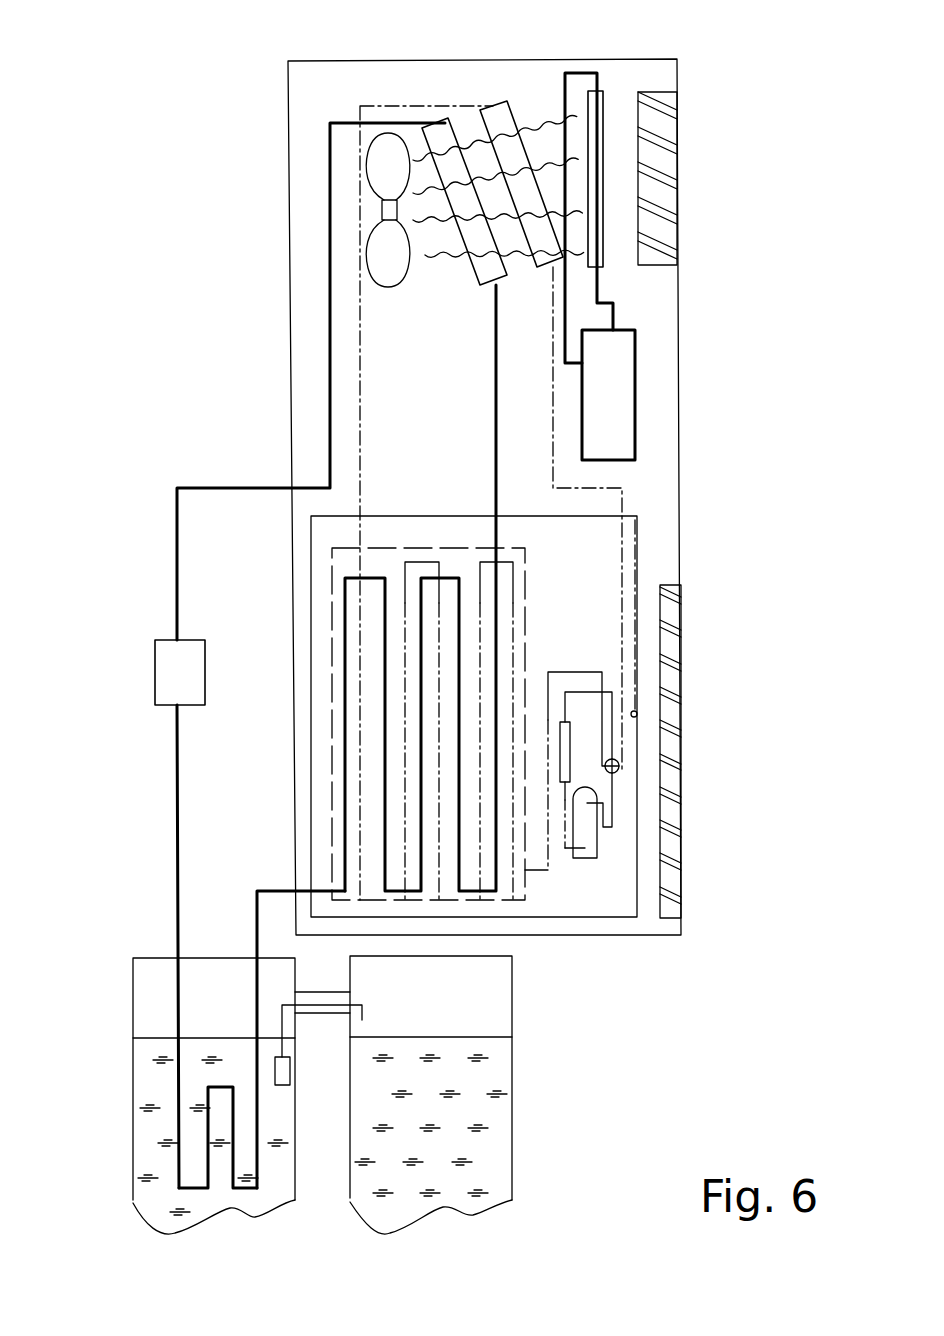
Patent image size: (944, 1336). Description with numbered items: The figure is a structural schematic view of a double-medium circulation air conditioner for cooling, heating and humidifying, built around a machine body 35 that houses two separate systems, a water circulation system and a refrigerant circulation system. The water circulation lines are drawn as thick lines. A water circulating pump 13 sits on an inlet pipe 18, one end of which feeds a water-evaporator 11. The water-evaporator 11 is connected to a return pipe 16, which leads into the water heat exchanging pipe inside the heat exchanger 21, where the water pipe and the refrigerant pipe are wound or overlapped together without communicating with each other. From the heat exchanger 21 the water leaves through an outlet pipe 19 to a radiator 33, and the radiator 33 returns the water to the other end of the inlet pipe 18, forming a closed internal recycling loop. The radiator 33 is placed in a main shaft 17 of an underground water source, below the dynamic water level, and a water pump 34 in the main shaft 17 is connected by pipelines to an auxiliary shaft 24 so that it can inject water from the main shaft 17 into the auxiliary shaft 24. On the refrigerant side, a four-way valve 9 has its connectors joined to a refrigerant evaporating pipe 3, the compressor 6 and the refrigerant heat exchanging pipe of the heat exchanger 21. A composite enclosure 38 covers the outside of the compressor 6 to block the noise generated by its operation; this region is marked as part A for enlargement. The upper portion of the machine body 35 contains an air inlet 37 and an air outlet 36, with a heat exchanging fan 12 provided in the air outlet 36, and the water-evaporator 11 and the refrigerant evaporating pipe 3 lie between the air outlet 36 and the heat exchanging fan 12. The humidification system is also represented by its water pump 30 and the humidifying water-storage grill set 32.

The refrigerant evaporating pipe 3 is at (512, 102).
The compressor 6 is at (590, 837).
The four-way valve 9 is at (615, 773).
The water-evaporator 11 is at (445, 132).
The heat exchanging fan 12 is at (385, 267).
The water circulating pump 13 is at (175, 670).
The return pipe 16 is at (496, 378).
The main shaft 17 is at (156, 1027).
The inlet pipe 18 is at (220, 488).
The outlet pipe 19 is at (283, 893).
The heat exchanger 21 is at (480, 893).
The auxiliary shaft 24 is at (488, 1127).
The water pump 30 is at (605, 407).
The humidifying water-storage grill set 32 is at (597, 113).
The radiator 33 is at (182, 1132).
The water pump 34 is at (277, 1065).
The machine body 35 is at (650, 358).
The air outlet 36 is at (647, 195).
The air inlet 37 is at (755, 577).
The composite enclosure 38 is at (633, 690).
The part A is at (637, 716).